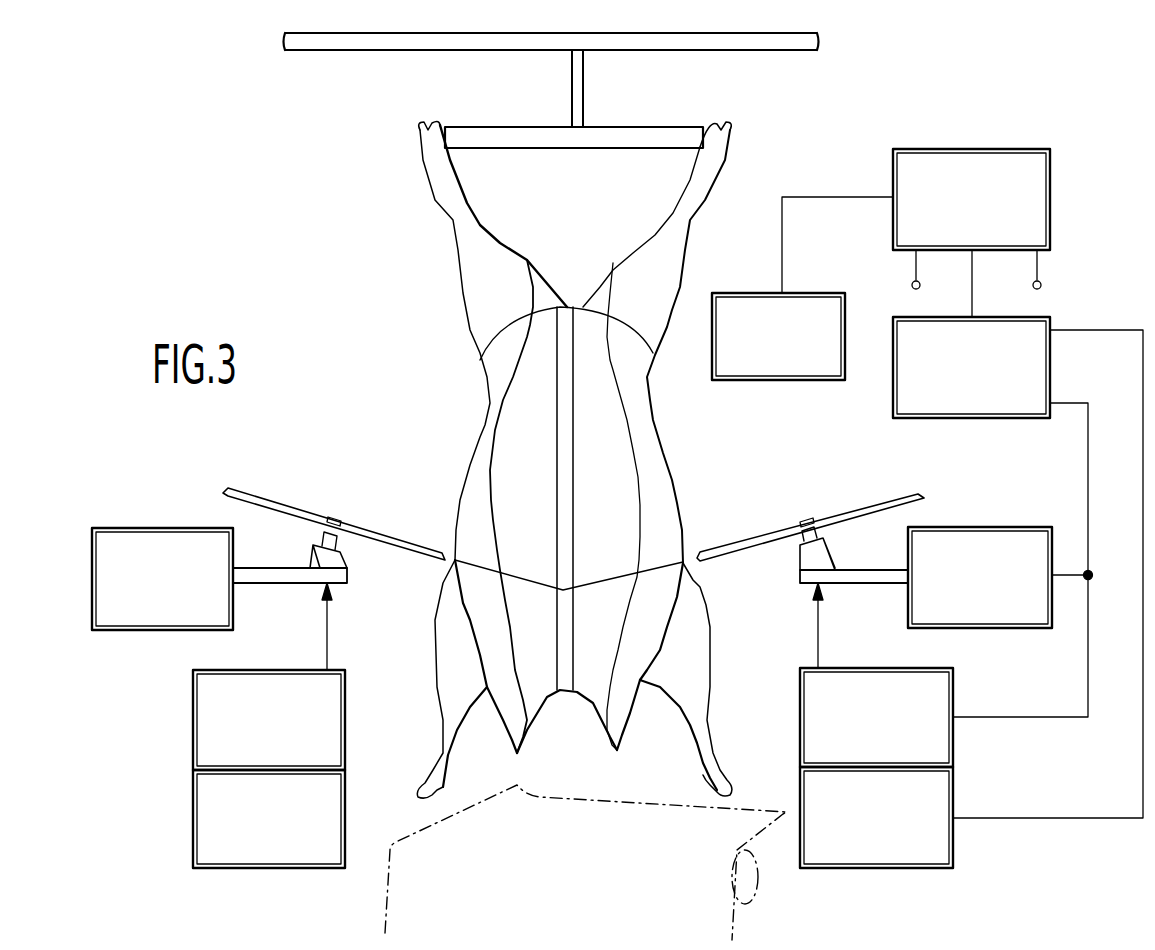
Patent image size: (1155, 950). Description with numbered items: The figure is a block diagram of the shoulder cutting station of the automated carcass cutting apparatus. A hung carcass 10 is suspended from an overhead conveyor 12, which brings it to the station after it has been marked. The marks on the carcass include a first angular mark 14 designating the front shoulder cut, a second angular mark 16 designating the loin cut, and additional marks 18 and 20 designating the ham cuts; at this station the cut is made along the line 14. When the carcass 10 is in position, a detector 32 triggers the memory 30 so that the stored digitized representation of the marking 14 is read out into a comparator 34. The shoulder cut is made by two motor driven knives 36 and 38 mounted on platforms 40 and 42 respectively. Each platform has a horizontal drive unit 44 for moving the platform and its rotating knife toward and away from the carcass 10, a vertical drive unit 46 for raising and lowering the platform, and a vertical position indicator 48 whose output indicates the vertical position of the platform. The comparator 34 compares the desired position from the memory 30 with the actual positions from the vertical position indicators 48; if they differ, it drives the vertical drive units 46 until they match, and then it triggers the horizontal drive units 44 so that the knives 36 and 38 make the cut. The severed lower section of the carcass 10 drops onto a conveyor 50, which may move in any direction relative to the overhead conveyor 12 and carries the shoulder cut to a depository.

The carcass 10 is at (470, 417).
The overhead conveyor 12 is at (618, 43).
The first angular mark 14 is at (569, 564).
The second angular mark 16 is at (510, 320).
The ham cut mark 18 is at (677, 213).
The ham cut mark 20 is at (455, 218).
The memory 30 is at (893, 172).
The detector 32 is at (807, 292).
The comparator 34 is at (892, 403).
The motor driven knife 36 is at (877, 503).
The motor driven knife 38 is at (278, 500).
The platform 40 is at (855, 570).
The platform 42 is at (287, 567).
The horizontal drive unit 44 is at (128, 530).
The vertical drive unit 46 is at (193, 690).
The vertical position indicator 48 is at (193, 782).
The conveyor 50 is at (575, 869).